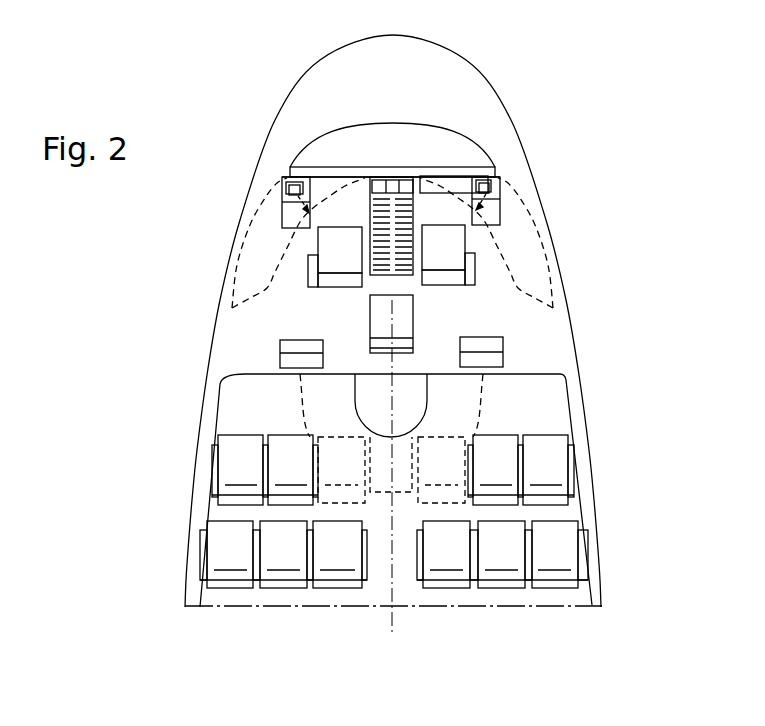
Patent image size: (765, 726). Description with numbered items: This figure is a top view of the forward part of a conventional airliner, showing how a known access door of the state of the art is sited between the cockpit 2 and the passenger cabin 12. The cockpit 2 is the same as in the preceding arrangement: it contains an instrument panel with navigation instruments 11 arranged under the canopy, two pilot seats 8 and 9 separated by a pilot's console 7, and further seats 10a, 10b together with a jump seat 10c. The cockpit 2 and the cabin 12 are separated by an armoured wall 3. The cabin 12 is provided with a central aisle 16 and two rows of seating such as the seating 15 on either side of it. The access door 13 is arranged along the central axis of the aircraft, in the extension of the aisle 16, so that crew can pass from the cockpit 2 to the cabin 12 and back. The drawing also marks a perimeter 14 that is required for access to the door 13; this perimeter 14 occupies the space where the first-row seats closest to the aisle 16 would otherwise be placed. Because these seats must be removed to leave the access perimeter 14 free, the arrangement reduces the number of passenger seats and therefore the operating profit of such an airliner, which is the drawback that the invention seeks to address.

The cockpit 2 is at (324, 326).
The armoured wall 3 is at (245, 380).
The pilot's console 7 is at (408, 202).
The pilot seat 8 is at (439, 261).
The pilot seat 9 is at (330, 262).
The seat 10a is at (280, 350).
The seat 10b is at (409, 326).
The jump seat 10c is at (503, 344).
The navigation instruments 11 is at (383, 159).
The passenger cabin 12 is at (378, 612).
The access door 13 is at (385, 410).
The perimeter 14 is at (490, 393).
The seating 15 is at (575, 465).
The aisle 16 is at (412, 606).